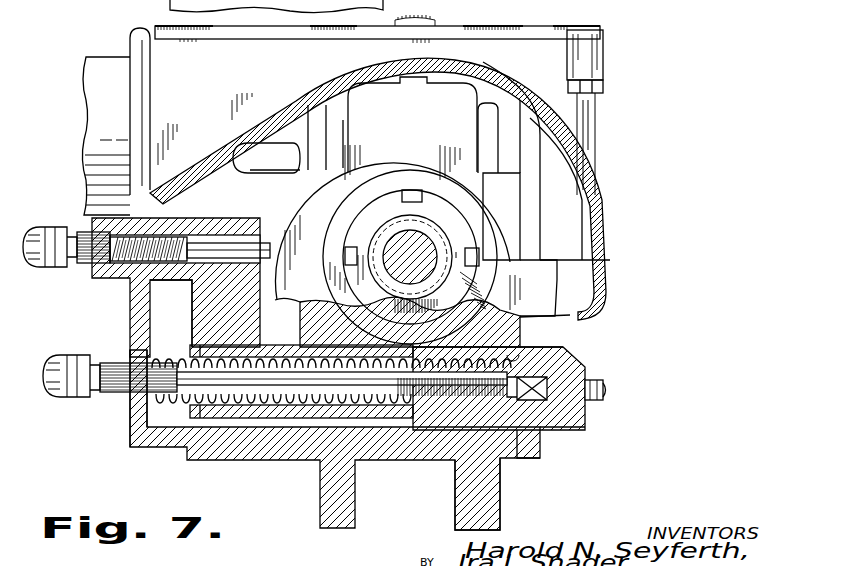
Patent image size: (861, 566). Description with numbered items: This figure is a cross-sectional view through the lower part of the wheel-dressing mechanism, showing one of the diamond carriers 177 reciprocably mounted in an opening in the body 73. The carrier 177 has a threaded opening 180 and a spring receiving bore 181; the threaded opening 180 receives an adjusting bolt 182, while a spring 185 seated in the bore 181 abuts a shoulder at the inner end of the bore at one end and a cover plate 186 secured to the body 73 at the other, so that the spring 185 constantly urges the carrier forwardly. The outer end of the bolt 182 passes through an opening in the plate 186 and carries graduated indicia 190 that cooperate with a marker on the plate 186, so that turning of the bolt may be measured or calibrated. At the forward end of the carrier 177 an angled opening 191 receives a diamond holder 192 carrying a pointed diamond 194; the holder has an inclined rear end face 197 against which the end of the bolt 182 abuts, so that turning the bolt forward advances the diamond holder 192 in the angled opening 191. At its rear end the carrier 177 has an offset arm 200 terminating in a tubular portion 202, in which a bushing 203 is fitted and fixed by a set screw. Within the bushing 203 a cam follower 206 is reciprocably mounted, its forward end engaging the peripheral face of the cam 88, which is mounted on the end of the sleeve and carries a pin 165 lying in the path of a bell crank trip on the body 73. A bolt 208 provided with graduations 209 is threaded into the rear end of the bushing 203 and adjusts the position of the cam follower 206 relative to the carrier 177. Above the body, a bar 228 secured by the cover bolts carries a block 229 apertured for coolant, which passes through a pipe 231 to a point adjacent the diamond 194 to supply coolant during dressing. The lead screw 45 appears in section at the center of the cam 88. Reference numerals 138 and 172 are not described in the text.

The plate 138 is at (103, 60).
The bar 228 is at (505, 38).
The block 229 is at (593, 48).
The pipe 231 is at (585, 112).
The cam 88 is at (462, 125).
The lead screw 45 is at (450, 222).
The pin 165 is at (502, 285).
The plate 172 is at (520, 333).
The cam follower 206 is at (240, 250).
The bushing 203 is at (220, 238).
The bolt 208 is at (65, 268).
The graduations 209 is at (88, 264).
The tubular portion 202 is at (123, 280).
The offset arm 200 is at (200, 308).
The graduated indicia 190 is at (113, 388).
The cover plate 186 is at (130, 423).
The spring 185 is at (277, 407).
The adjusting bolt 182 is at (317, 387).
The spring receiving bore 181 is at (383, 407).
The threaded opening 180 is at (455, 395).
The body 73 is at (517, 455).
The inclined rear end face 197 is at (540, 430).
The pointed diamond 194 is at (603, 398).
The diamond holder 192 is at (597, 383).
The angled opening 191 is at (583, 365).
The diamond carrier 177 is at (560, 360).